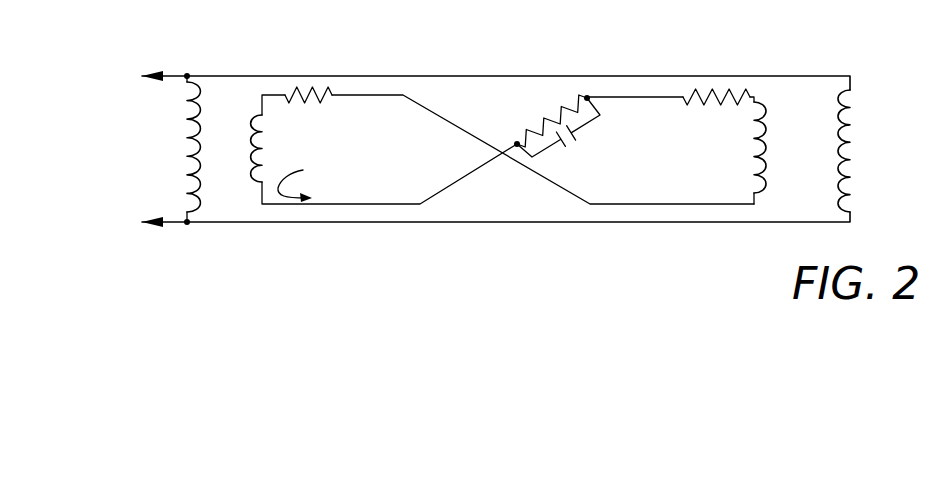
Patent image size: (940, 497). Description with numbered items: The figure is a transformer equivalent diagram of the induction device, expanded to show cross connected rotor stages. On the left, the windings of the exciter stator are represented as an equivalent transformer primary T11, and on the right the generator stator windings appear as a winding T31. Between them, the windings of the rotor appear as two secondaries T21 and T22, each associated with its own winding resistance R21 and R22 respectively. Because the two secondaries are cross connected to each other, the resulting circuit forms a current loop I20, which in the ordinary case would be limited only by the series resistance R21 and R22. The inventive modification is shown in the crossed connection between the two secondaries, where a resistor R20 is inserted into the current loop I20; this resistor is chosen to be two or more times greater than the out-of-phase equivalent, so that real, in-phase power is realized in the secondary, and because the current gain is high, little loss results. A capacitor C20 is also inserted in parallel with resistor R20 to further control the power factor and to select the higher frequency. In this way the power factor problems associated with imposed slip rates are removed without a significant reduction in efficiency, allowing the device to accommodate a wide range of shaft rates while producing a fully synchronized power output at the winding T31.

The equivalent transformer primary T11 is at (185, 139).
The secondary T21 is at (267, 133).
The winding resistance R21 is at (326, 97).
The current loop I20 is at (312, 181).
The resistor R20 is at (522, 128).
The capacitor C20 is at (564, 144).
The winding resistance R22 is at (736, 99).
The secondary T22 is at (755, 150).
The winding T31 is at (850, 131).